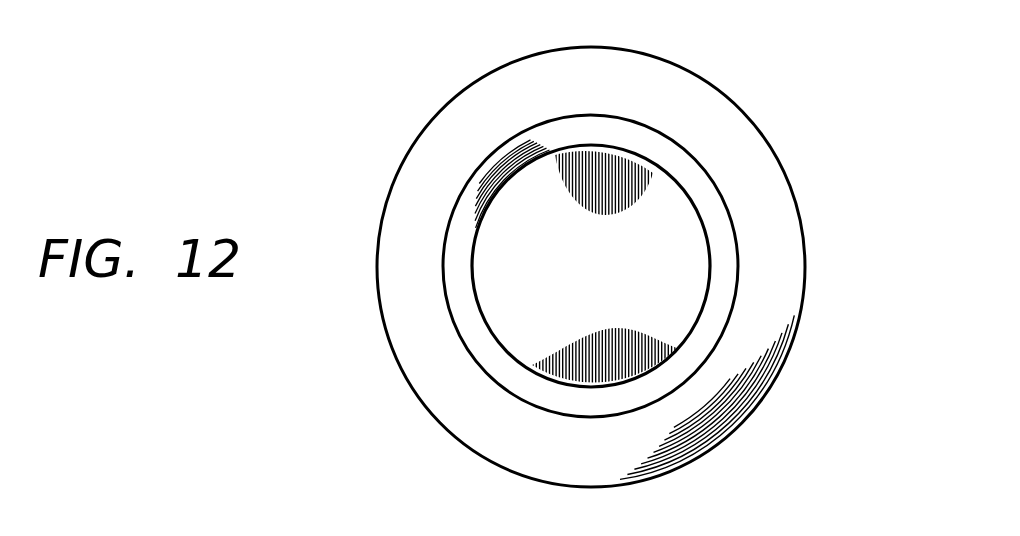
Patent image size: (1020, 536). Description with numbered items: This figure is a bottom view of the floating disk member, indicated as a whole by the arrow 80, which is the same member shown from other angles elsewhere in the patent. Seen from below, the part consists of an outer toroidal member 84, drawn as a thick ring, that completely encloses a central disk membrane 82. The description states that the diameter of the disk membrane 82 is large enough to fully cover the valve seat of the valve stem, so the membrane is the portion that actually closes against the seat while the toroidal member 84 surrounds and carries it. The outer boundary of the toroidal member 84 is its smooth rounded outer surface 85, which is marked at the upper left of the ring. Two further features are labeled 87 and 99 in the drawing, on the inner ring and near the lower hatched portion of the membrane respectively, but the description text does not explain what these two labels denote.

The ring assembly 80 is at (626, 249).
The disk membrane 82 is at (675, 205).
The toroidal member 84 is at (405, 399).
The smooth rounded outer surface 85 is at (487, 72).
The inner ring 87 is at (457, 262).
The hatched shading region 99 is at (688, 338).